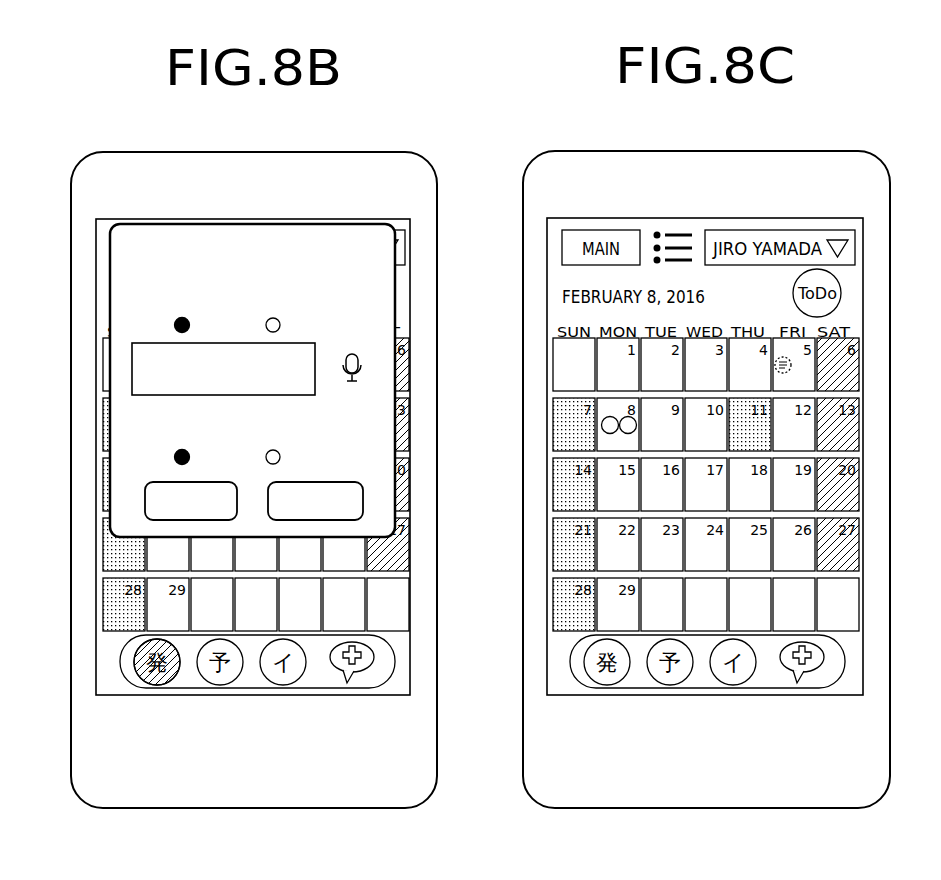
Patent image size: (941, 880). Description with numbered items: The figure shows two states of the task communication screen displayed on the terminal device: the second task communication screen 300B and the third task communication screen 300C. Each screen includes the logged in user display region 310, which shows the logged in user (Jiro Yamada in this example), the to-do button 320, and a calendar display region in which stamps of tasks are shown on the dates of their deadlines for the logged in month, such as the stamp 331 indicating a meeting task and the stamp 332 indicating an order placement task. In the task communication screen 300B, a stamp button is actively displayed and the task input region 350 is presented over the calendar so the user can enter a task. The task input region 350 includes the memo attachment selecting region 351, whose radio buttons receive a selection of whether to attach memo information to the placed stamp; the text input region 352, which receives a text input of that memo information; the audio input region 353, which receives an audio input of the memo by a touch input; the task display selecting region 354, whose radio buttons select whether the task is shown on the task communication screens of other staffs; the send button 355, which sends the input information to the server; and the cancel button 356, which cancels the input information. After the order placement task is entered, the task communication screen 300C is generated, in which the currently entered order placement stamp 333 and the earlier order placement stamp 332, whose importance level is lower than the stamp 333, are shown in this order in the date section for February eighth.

In FIG. 8B, the task communication screen 300B is at (358, 150).
In FIG. 8C, the task communication screen 300C is at (808, 150).
In FIG. 8B, the logged in user display region 310 is at (217, 468).
In FIG. 8B, the to-do button 320 is at (0, 223).
In FIG. 8B, the stamp 331 is at (208, 430).
In FIG. 8C, the stamp 331 is at (792, 362).
In FIG. 8C, the stamp 332 is at (626, 433).
In FIG. 8C, the order placement stamp 333 is at (603, 430).
In FIG. 8B, the task input region 350 is at (395, 290).
In FIG. 8B, the memo attachment selecting region 351 is at (172, 322).
In FIG. 8B, the text input region 352 is at (133, 370).
In FIG. 8B, the audio input region 353 is at (366, 368).
In FIG. 8B, the task display selecting region 354 is at (172, 452).
In FIG. 8B, the send button 355 is at (145, 502).
In FIG. 8B, the cancel button 356 is at (364, 498).